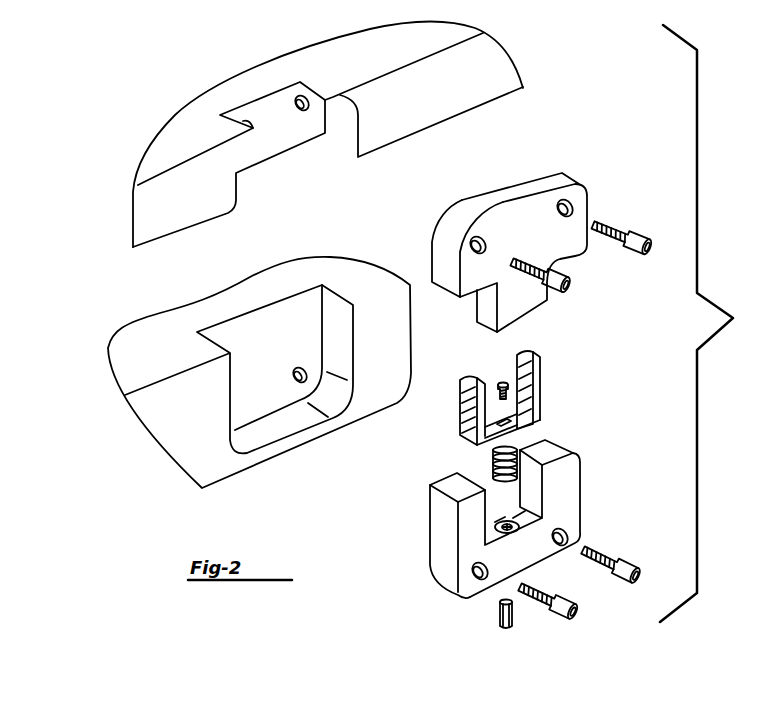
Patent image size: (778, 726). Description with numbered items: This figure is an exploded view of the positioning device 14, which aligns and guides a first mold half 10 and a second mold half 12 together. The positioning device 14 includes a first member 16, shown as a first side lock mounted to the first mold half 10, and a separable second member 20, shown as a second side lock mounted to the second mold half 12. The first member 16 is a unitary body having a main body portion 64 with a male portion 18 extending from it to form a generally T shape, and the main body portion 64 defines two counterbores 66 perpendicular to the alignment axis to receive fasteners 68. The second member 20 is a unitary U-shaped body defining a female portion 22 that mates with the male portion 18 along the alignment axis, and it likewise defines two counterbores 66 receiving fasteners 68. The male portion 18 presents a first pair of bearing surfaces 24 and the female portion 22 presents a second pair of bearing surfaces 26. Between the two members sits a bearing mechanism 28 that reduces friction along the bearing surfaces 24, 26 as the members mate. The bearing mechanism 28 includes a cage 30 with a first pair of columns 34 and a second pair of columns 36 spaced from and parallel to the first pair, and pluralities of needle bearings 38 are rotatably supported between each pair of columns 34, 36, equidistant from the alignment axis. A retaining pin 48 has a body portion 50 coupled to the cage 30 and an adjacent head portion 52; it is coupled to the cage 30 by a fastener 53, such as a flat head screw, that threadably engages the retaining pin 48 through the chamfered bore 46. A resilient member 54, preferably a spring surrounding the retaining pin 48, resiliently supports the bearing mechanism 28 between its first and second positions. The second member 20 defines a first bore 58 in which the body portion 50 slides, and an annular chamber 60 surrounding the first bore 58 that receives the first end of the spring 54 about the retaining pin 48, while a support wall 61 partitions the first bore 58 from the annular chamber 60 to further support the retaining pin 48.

The first mold half 10 is at (370, 59).
The second mold half 12 is at (165, 360).
The positioning device 14 is at (601, 200).
The first member 16 is at (536, 232).
The male portion 18 is at (554, 308).
The second member 20 is at (502, 511).
The female portion 22 is at (500, 499).
The first pair of bearing surfaces 24 is at (483, 308).
The second pair of bearing surfaces 26 is at (535, 482).
The bearing mechanism 28 is at (593, 411).
The cage 30 is at (480, 395).
The first pair of columns 34 is at (467, 379).
The second pair of columns 36 is at (527, 356).
The needle bearings 38 is at (528, 388).
The chamfered bore 46 is at (513, 413).
The retaining pin 48 is at (482, 622).
The body portion 50 is at (517, 612).
The head portion 52 is at (505, 628).
The fastener 53 is at (502, 381).
The resilient member 54 is at (528, 471).
The first bore 58 is at (496, 526).
The annular chamber 60 is at (523, 512).
The support wall 61 is at (442, 538).
The main body portion 64 is at (515, 215).
The counterbores 66 is at (567, 214).
The fasteners 68 is at (583, 268).